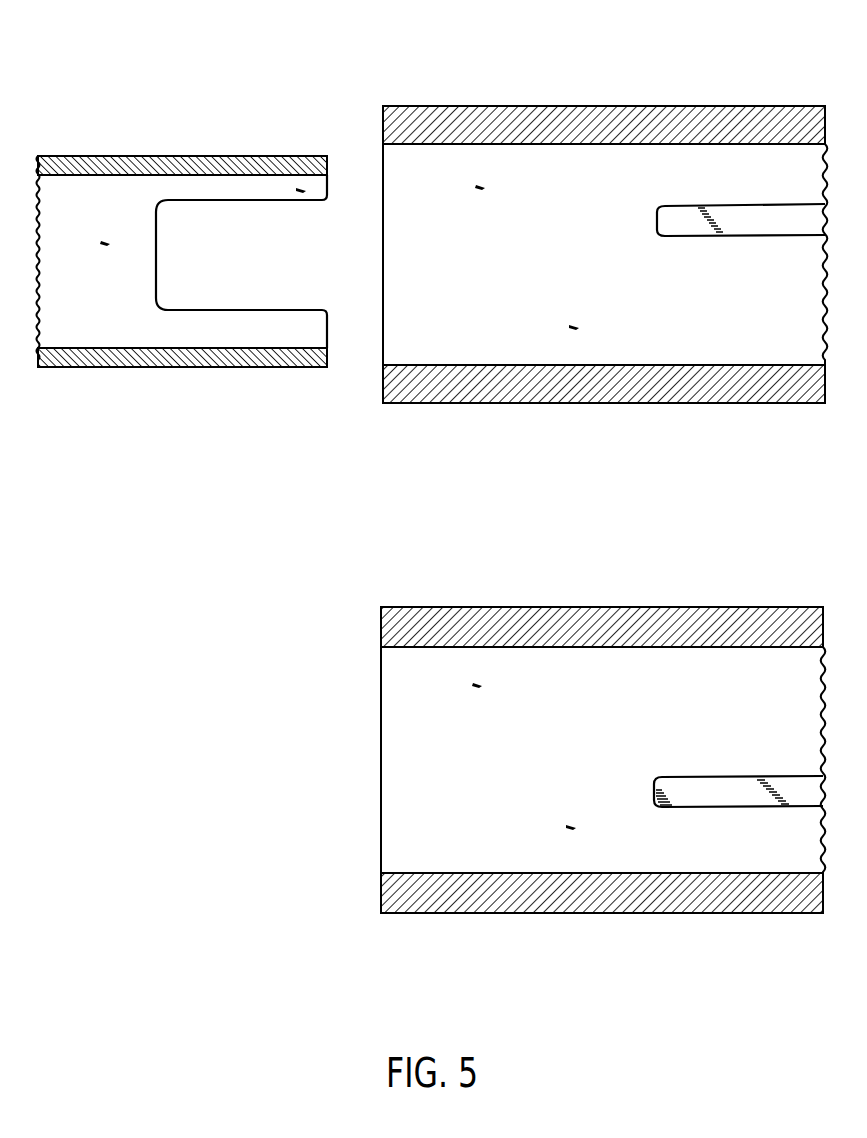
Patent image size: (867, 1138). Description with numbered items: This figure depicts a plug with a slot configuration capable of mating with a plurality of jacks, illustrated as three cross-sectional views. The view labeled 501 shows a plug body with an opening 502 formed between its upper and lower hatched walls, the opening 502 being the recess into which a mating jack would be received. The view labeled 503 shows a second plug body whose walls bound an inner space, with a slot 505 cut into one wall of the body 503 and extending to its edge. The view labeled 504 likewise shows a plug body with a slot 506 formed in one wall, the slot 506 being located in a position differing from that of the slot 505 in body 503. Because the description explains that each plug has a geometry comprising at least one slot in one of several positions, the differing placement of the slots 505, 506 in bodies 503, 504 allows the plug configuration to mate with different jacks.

The first interconnect structure with via opening 501 is at (182, 228).
The via opening / cavity 502 is at (237, 258).
The second interconnect structure 503 is at (605, 212).
The third interconnect structure 504 is at (603, 718).
The trench / slot with defect 505 is at (752, 205).
The trench / slot with defects 506 is at (724, 776).